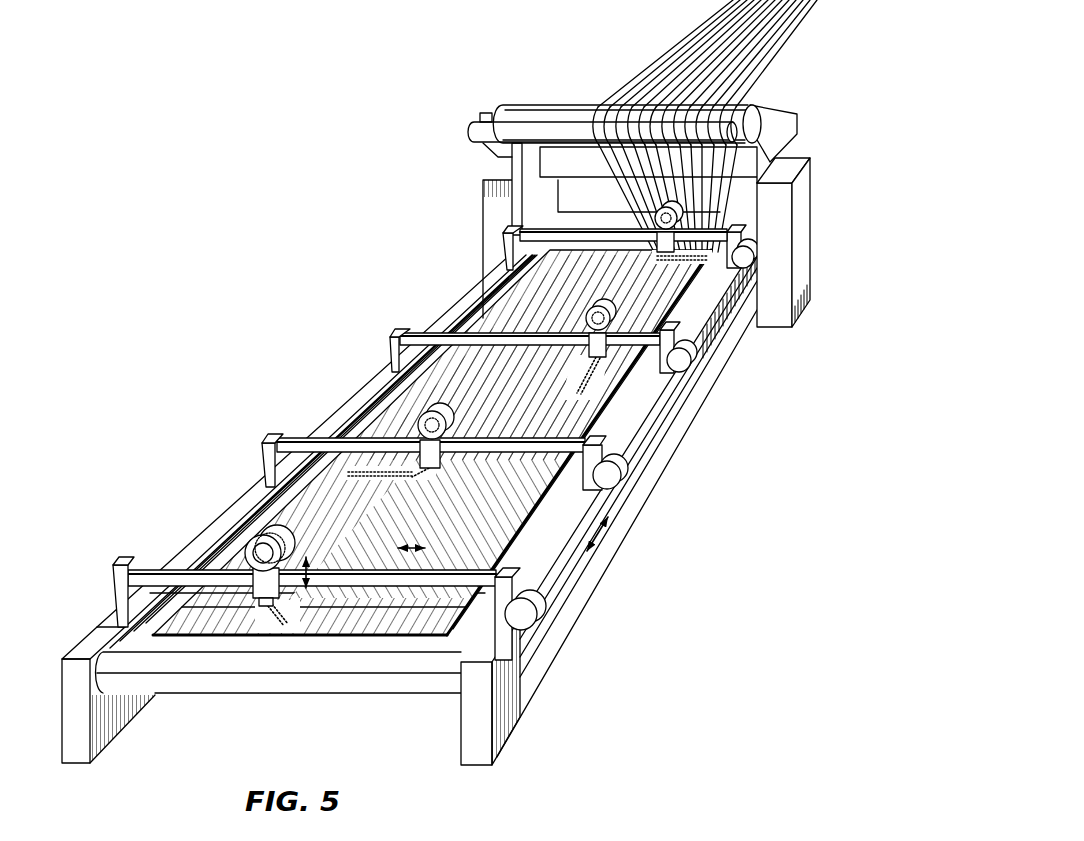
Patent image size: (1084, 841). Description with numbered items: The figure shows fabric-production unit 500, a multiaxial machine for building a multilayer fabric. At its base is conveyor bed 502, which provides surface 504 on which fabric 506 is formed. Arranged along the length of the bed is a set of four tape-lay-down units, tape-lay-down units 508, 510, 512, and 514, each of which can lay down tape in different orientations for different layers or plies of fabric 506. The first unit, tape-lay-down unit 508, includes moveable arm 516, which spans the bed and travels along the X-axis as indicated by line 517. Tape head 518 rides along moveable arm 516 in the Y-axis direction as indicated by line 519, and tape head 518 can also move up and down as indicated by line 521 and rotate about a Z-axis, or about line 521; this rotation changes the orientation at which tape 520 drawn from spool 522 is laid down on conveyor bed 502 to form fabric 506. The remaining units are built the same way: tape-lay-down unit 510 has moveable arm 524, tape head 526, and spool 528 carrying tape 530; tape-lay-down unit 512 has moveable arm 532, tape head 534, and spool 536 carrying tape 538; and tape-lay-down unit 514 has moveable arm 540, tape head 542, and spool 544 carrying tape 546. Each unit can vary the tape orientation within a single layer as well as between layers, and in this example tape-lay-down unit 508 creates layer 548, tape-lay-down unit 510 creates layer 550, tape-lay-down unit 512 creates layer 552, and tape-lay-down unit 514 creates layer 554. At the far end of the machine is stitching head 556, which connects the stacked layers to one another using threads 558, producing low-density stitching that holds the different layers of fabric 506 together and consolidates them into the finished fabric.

The fabric-production unit 500 is at (435, 382).
The conveyor bed 502 is at (366, 698).
The surface 504 is at (126, 647).
The fabric 506 is at (472, 315).
The tape-lay-down unit 508 is at (563, 608).
The tape-lay-down unit 510 is at (624, 476).
The tape-lay-down unit 512 is at (701, 346).
The tape-lay-down unit 514 is at (507, 251).
The moveable arm 516 is at (518, 578).
The line 517 is at (602, 543).
The tape head 518 is at (262, 590).
The line 519 is at (432, 546).
The tape 520 is at (265, 537).
The line 521 is at (313, 560).
The spool 522 is at (253, 548).
The moveable arm 524 is at (624, 452).
The tape head 526 is at (458, 478).
The spool 528 is at (454, 428).
The tape 530 is at (444, 408).
The moveable arm 532 is at (705, 330).
The tape head 534 is at (584, 369).
The spool 536 is at (588, 318).
The tape 538 is at (604, 311).
The moveable arm 540 is at (518, 232).
The tape head 542 is at (628, 253).
The spool 544 is at (657, 216).
The tape 546 is at (672, 212).
The layer 548 is at (342, 630).
The layer 550 is at (377, 467).
The layer 552 is at (618, 400).
The layer 554 is at (684, 272).
The stitching head 556 is at (544, 107).
The threads 558 is at (661, 67).